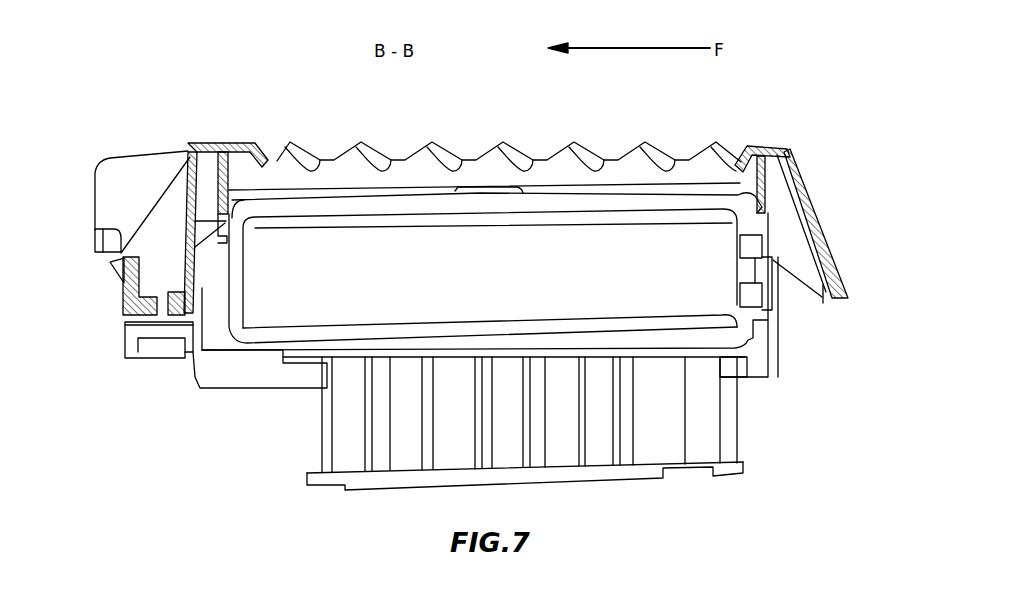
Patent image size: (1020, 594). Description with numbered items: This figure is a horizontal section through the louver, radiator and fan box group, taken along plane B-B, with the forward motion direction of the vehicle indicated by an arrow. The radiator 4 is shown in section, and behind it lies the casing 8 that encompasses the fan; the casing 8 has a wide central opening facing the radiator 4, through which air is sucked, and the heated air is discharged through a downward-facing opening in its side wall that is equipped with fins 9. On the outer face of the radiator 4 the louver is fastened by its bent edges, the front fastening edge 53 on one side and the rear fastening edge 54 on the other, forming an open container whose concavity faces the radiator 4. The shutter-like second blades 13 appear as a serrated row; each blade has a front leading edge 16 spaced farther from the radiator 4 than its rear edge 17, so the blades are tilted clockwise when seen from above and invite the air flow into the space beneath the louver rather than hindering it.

The radiator 4 is at (290, 300).
The casing 8 is at (757, 392).
The fins 9 is at (475, 400).
The second blades 13 is at (489, 152).
The front leading edge 16 is at (287, 140).
The rear edge 17 is at (326, 140).
The front fastening edge 53 is at (100, 264).
The rear fastening edge 54 is at (827, 288).